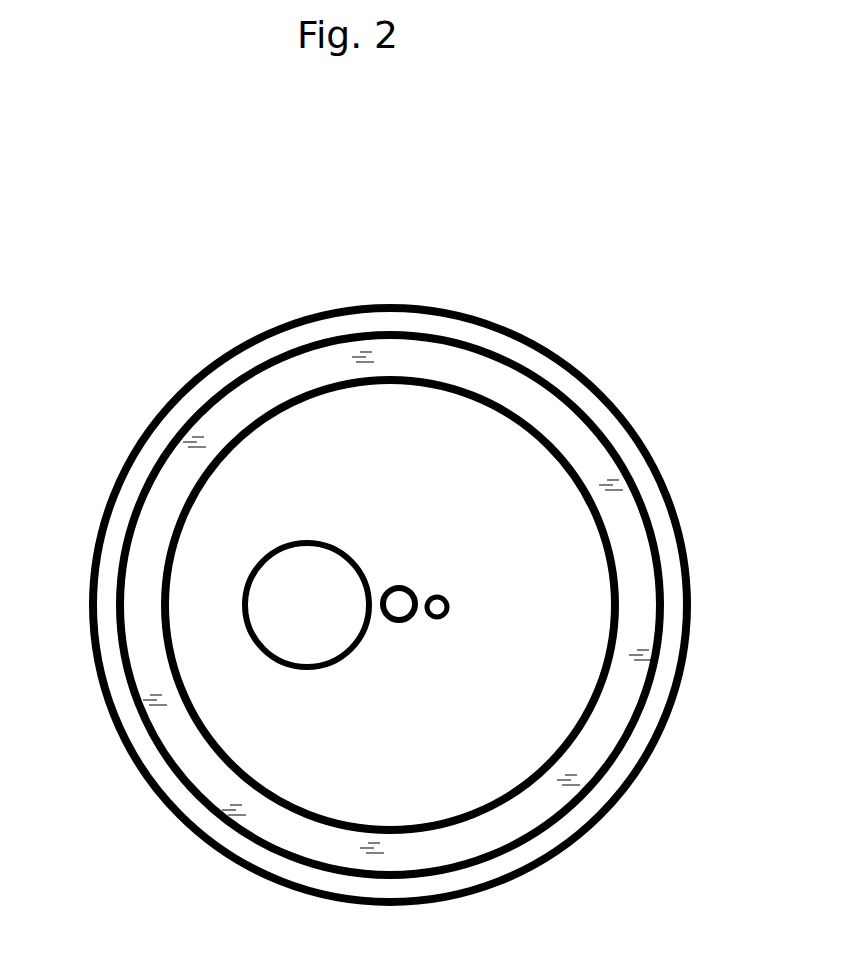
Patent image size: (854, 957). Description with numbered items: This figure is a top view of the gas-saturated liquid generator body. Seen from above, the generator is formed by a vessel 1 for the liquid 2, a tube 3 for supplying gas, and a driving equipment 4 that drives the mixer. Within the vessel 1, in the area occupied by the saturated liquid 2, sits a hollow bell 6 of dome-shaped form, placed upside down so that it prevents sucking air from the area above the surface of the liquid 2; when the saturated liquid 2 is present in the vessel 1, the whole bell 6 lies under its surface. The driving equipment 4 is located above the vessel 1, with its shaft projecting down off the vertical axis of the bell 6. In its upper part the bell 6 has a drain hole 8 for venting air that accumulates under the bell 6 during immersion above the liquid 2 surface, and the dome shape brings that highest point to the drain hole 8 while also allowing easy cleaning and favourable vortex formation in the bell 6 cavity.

The vessel 1 is at (533, 340).
The liquid 2 is at (187, 748).
The bell 6 is at (580, 472).
The driving equipment 4 is at (270, 627).
The tube 3 is at (402, 610).
The drain hole 8 is at (440, 593).